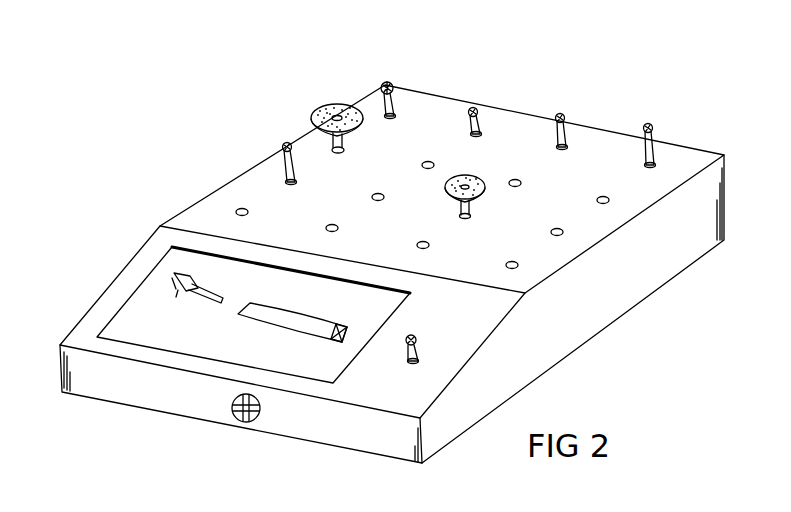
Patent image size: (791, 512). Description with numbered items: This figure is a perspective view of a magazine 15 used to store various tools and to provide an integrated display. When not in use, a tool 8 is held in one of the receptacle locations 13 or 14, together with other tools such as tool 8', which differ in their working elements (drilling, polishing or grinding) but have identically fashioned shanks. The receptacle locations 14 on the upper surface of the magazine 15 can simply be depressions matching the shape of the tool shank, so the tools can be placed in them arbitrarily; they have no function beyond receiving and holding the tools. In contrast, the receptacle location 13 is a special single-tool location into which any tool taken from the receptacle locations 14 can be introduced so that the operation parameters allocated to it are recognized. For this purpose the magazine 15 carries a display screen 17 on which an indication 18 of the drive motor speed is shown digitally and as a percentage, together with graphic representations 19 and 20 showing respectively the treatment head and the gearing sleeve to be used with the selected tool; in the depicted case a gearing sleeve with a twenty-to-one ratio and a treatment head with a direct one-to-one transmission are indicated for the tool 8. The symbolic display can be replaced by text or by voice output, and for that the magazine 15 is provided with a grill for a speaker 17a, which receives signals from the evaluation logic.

The tool 8 is at (424, 327).
The tool 8' is at (337, 110).
The receptacle location 13 is at (418, 355).
The receptacle locations 14 is at (287, 178).
The magazine 15 is at (627, 291).
The display screen 17 is at (140, 308).
The speaker 17a is at (253, 423).
The indication of the speed of the drive motor 18 is at (187, 352).
The graphic representation of the treatment head 19 is at (176, 272).
The graphic representation of the gearing sleeve 20 is at (348, 336).